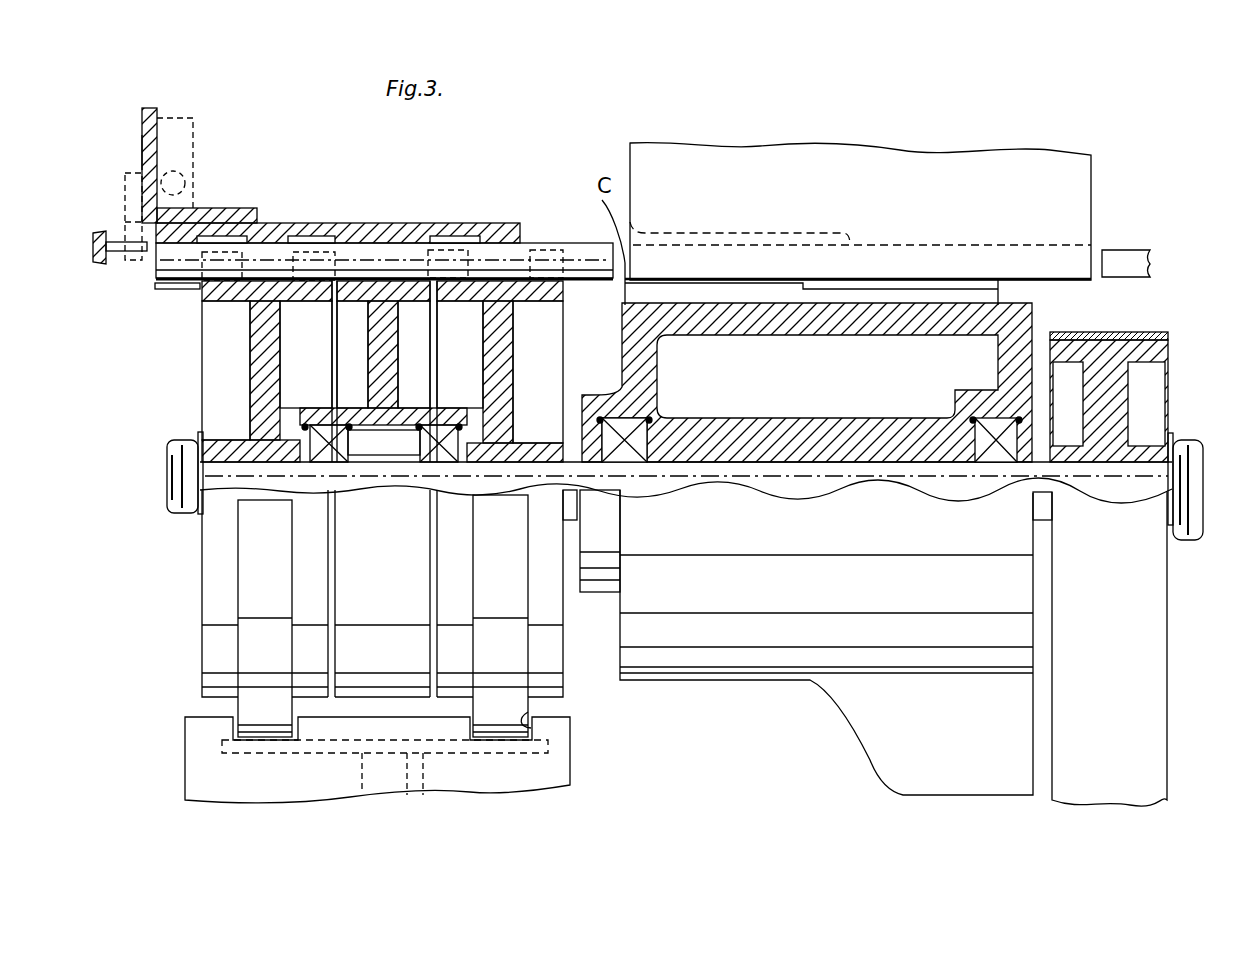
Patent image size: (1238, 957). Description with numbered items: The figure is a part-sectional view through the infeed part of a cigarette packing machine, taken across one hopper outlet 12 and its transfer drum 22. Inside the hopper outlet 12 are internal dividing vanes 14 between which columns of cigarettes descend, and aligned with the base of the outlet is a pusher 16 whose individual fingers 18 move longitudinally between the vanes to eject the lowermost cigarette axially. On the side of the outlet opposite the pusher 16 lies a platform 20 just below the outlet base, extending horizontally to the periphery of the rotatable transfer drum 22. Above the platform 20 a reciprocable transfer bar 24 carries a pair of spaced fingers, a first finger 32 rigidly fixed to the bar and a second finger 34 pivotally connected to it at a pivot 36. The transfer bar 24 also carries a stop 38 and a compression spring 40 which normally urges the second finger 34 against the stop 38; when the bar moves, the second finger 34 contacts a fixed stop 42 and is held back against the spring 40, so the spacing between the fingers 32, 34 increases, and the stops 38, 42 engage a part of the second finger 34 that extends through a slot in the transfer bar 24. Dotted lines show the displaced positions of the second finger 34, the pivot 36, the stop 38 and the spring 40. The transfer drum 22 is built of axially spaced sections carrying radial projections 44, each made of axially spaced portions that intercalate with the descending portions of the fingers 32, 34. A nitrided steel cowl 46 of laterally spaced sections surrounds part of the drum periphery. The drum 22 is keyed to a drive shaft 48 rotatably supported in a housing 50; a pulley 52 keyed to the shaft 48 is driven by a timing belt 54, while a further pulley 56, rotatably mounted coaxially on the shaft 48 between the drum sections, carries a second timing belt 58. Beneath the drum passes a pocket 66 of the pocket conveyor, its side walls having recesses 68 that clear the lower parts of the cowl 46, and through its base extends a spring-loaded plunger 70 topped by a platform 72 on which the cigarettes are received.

The hopper outlet 12 is at (895, 197).
The dividing vane 14 is at (722, 233).
The pusher 16 is at (1128, 282).
The finger 18 is at (1123, 250).
The platform 20 is at (163, 290).
The transfer drum 22 is at (202, 352).
The transfer bar 24 is at (150, 108).
The first finger 32 is at (345, 222).
The second finger 34 is at (193, 150).
The pivot 36 is at (142, 140).
The stop 38 is at (128, 185).
The compression spring 40 is at (186, 178).
The fixed stop 42 is at (111, 252).
The radial projection 44 is at (318, 252).
The cowl 46 is at (238, 638).
The drive shaft 48 is at (700, 473).
The housing 50 is at (705, 325).
The pulley 52 is at (1168, 385).
The timing belt 54 is at (1152, 333).
The further pulley 56 is at (416, 293).
The timing belt 58 is at (383, 283).
The pocket 66 is at (572, 765).
The recess 68 is at (528, 712).
The plunger 70 is at (360, 775).
The platform 72 is at (424, 797).